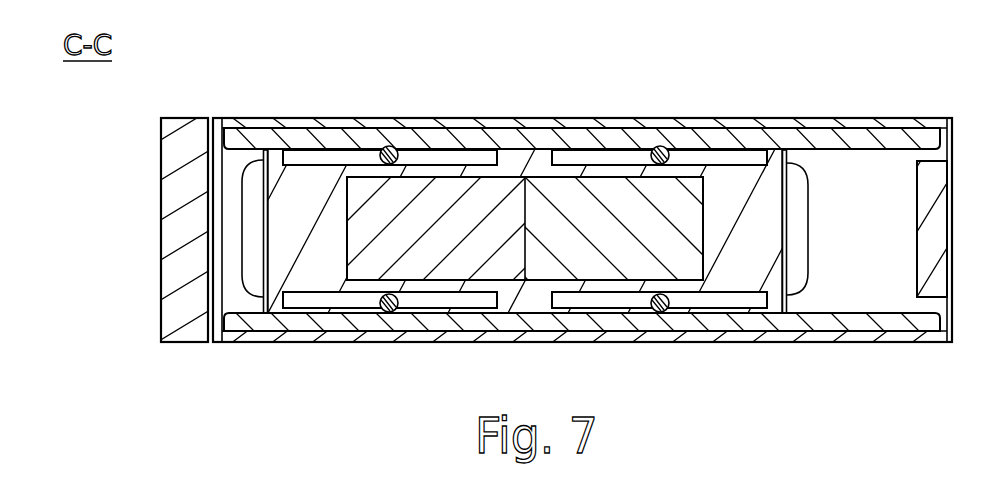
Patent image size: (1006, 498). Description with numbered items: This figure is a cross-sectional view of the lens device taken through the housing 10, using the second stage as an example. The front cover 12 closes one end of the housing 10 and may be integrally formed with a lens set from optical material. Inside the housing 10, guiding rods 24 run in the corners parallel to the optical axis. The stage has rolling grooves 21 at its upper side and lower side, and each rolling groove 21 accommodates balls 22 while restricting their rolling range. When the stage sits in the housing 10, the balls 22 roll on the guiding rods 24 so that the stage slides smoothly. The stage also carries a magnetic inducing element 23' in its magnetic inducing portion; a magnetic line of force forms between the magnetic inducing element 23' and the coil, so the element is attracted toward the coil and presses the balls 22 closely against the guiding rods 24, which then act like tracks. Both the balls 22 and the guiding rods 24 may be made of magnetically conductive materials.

The housing 10 is at (235, 122).
The front cover 12 is at (168, 235).
The rolling groove 21 is at (320, 148).
The ball 22 is at (388, 147).
The magnetic inducing element 23' is at (510, 282).
The guiding rod 24 is at (840, 137).